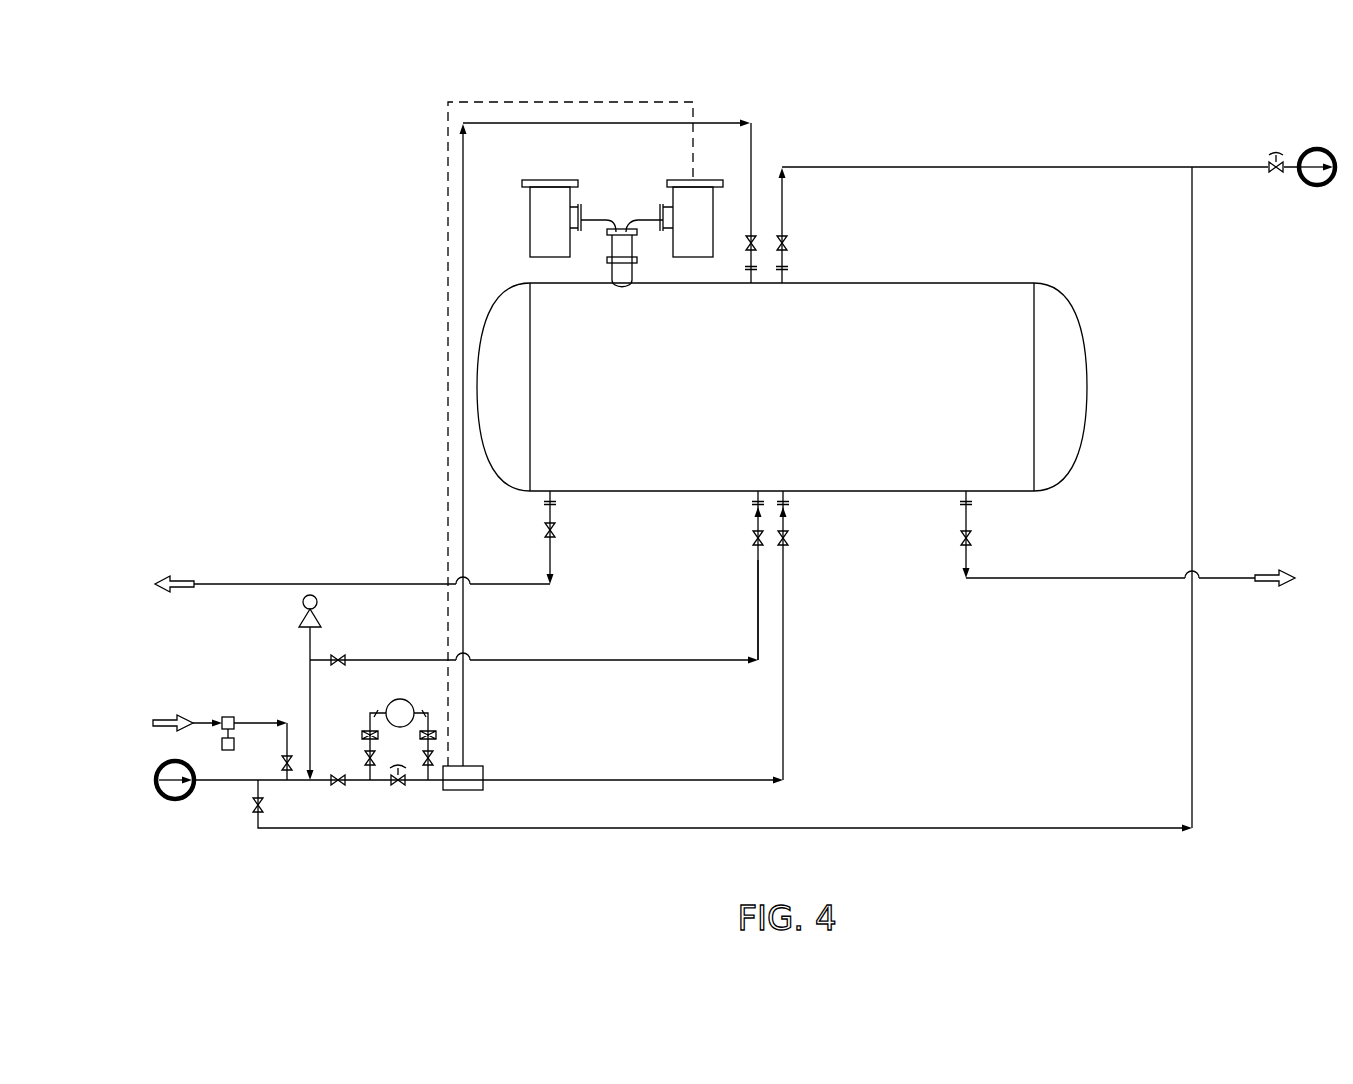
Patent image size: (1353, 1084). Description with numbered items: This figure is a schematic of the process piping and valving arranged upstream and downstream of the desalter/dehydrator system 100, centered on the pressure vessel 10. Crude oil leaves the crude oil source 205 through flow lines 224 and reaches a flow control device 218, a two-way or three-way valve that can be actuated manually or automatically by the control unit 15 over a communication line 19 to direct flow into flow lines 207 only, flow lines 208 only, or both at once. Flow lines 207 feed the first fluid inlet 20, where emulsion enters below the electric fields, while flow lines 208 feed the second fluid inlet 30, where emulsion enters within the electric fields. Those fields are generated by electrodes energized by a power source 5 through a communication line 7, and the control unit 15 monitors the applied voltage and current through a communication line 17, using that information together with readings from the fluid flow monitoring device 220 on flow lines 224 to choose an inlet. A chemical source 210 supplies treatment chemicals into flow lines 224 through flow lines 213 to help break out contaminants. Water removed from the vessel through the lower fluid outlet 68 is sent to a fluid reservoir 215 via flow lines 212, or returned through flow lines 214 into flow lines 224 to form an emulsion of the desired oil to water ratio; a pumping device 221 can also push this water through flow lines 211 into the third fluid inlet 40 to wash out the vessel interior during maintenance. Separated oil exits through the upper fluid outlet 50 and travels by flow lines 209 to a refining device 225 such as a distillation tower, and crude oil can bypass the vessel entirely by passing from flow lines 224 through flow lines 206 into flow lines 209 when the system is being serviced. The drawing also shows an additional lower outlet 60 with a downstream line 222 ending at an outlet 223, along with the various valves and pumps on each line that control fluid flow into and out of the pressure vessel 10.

The power source 5 is at (528, 204).
The communication line 7 is at (604, 217).
The pressure vessel 10 is at (1081, 318).
The control unit 15 is at (732, 182).
The communication line 17 is at (640, 217).
The communication line 19 is at (446, 360).
The first fluid inlet 20 is at (790, 497).
The second fluid inlet 30 is at (747, 282).
The third fluid inlet 40 is at (752, 497).
The upper fluid outlet 50 is at (786, 283).
The outlet nozzle 60 is at (972, 496).
The lower fluid outlet 68 is at (556, 496).
The desalter/dehydrator system 100 is at (1066, 226).
The crude oil source 205 is at (160, 798).
The flow lines 206 is at (1192, 770).
The flow lines 207 is at (780, 754).
The flow lines 208 is at (752, 146).
The flow lines 209 is at (776, 178).
The chemical source 210 is at (150, 723).
The flow lines 211 is at (756, 632).
The flow lines 212 is at (546, 566).
The flow lines 213 is at (258, 720).
The flow lines 214 is at (306, 648).
The fluid reservoir 215 is at (162, 574).
The flow control device 218 is at (476, 790).
The fluid flow monitoring device 220 is at (399, 699).
The pumping device 221 is at (318, 604).
The line 222 is at (1076, 580).
The outlet 223 is at (1264, 572).
The flow lines 224 is at (222, 782).
The refining device 225 is at (1316, 148).